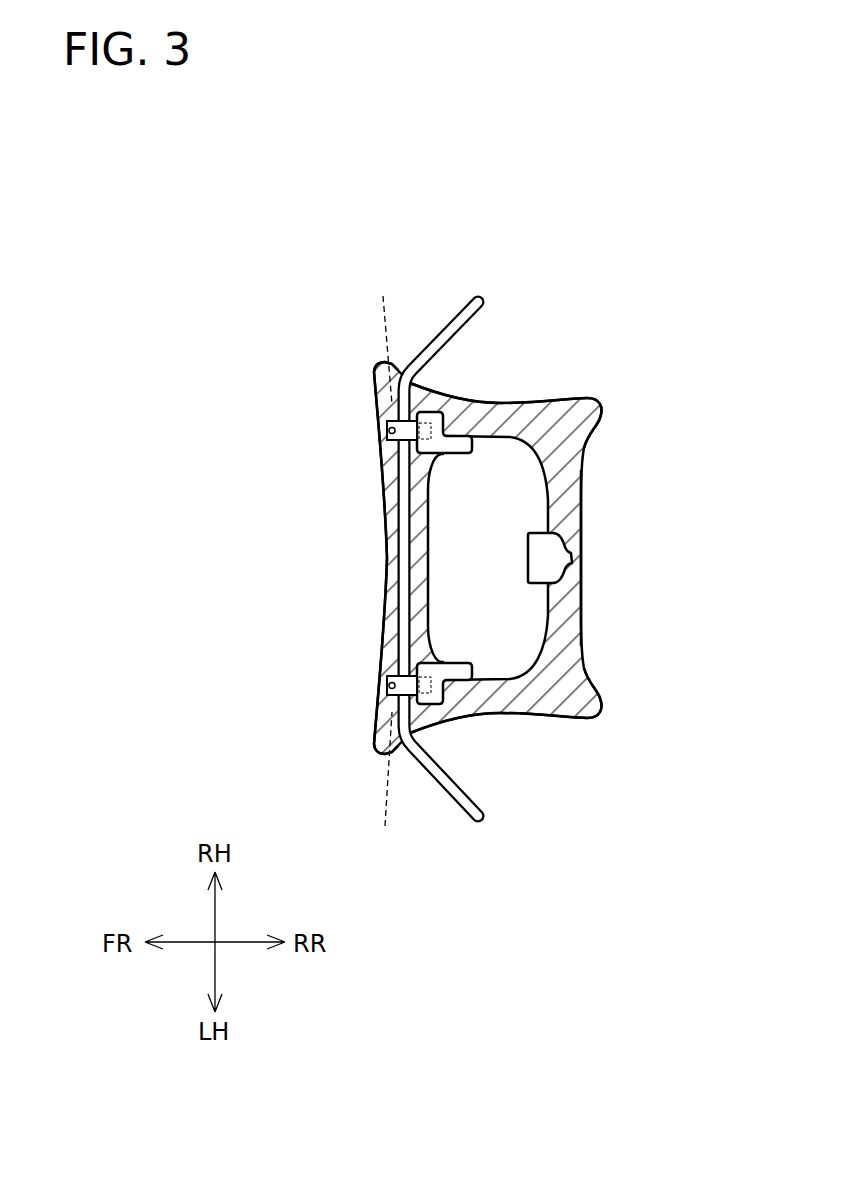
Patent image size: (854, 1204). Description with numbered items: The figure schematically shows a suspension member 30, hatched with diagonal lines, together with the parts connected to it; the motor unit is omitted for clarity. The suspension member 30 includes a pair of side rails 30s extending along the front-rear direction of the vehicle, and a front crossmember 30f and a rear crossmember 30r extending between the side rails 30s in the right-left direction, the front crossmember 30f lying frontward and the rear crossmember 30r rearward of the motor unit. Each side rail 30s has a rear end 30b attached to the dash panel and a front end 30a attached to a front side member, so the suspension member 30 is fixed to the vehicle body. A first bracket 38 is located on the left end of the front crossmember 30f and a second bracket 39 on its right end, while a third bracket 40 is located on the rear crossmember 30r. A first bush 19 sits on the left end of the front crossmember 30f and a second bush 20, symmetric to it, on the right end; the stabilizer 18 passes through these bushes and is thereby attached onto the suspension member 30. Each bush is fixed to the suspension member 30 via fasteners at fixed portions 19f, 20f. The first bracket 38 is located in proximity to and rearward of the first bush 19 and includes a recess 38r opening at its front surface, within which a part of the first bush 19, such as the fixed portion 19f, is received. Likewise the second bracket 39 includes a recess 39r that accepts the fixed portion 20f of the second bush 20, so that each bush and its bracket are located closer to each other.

The stabilizer 18 is at (434, 349).
The first bush 19 is at (387, 690).
The fixed portion 19f is at (419, 672).
The second bush 20 is at (387, 428).
The fixed portion 20f is at (419, 446).
The suspension member 30 is at (642, 282).
The front end 30a is at (386, 362).
The rear end 30b is at (603, 403).
The front crossmember 30f is at (384, 542).
The rear crossmember 30r is at (583, 596).
The side rails 30s is at (507, 424).
The first bracket 38 is at (447, 710).
The recess 38r is at (380, 782).
The second bracket 39 is at (432, 414).
The recess 39r is at (380, 337).
The third bracket 40 is at (575, 535).